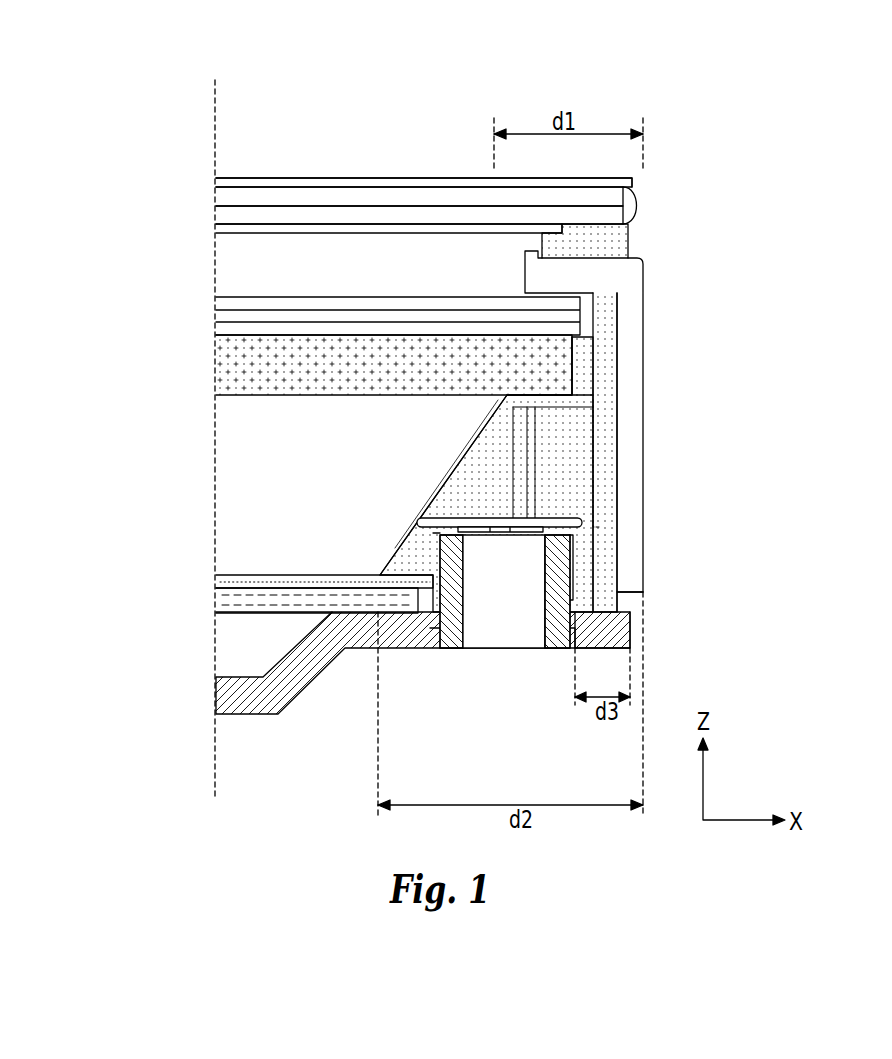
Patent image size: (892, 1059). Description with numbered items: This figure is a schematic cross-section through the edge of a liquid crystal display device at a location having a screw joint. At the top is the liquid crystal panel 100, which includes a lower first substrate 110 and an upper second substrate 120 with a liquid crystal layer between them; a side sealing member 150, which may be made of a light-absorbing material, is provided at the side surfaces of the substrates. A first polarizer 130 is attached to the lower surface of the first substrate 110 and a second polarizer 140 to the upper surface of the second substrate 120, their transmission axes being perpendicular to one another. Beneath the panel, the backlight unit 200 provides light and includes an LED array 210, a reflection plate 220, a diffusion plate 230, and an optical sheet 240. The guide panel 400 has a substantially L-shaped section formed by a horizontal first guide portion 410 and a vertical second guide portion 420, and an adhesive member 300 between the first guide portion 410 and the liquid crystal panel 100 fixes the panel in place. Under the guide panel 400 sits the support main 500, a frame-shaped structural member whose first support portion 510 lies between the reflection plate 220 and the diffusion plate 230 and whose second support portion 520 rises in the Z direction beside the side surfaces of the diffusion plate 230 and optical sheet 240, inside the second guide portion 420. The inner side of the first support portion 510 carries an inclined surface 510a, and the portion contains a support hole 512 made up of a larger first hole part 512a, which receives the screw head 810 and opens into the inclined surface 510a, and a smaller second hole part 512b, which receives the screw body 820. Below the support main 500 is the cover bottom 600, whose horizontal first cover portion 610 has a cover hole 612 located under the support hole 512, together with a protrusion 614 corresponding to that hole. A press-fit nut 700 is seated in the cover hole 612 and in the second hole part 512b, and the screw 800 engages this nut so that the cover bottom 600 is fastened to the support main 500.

The liquid crystal panel 100 is at (310, 53).
The first substrate 110 is at (307, 217).
The second substrate 120 is at (397, 197).
The first polarizer 130 is at (442, 230).
The second polarizer 140 is at (502, 182).
The side sealing member 150 is at (633, 206).
The backlight unit 200 is at (153, 322).
The light emitting diode (LED) array 210 is at (220, 600).
The reflection plate 220 is at (216, 581).
The diffusion plate 230 is at (238, 365).
The optical sheet 240 is at (213, 298).
The adhesive member 300 is at (608, 245).
The guide panel 400 is at (782, 325).
The first guide portion 410 is at (598, 277).
The second guide portion 420 is at (630, 330).
The support main 500 is at (748, 403).
The first support portion 510 is at (573, 442).
The inclined surface 510a is at (468, 447).
The support hole 512 is at (785, 525).
The first hole part 512a is at (595, 506).
The second hole part 512b is at (573, 570).
The second support portion 520 is at (605, 357).
The cover bottom 600 is at (360, 632).
The first cover portion 610 is at (507, 663).
The cover hole 612 is at (622, 650).
The protrusion 614 is at (578, 640).
The press-fit nut 700 is at (558, 637).
The screw 800 is at (470, 733).
The screw head 810 is at (422, 613).
The screw body 820 is at (497, 630).